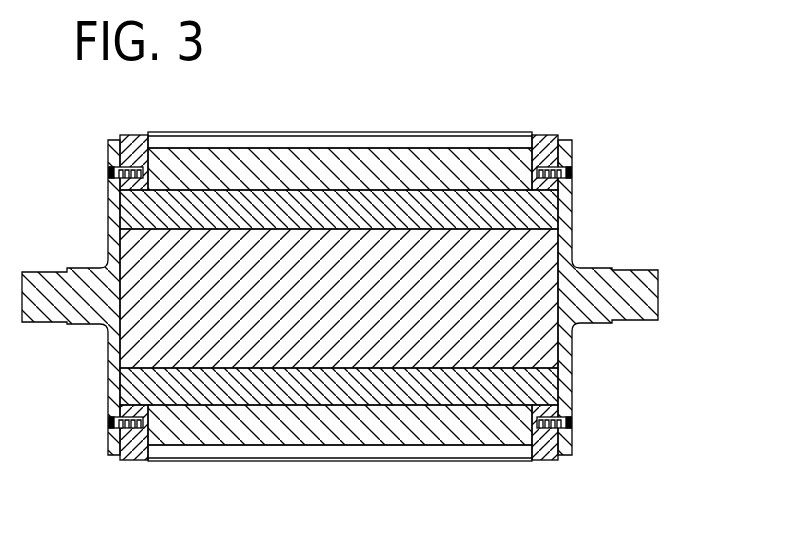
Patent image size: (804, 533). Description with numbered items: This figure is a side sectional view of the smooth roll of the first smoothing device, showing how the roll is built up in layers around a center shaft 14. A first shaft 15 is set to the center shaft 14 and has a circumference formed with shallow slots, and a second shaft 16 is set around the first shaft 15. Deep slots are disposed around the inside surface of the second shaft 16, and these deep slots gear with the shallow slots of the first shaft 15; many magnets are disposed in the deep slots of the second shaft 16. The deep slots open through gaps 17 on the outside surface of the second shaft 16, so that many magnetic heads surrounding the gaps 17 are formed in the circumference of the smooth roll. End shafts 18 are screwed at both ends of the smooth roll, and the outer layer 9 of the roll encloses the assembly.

The housing sleeve 9 is at (222, 162).
The center shaft 14 is at (572, 228).
The first shaft 15 is at (128, 205).
The second shaft 16 is at (547, 156).
The gaps 17 is at (451, 143).
The end shafts 18 is at (82, 281).